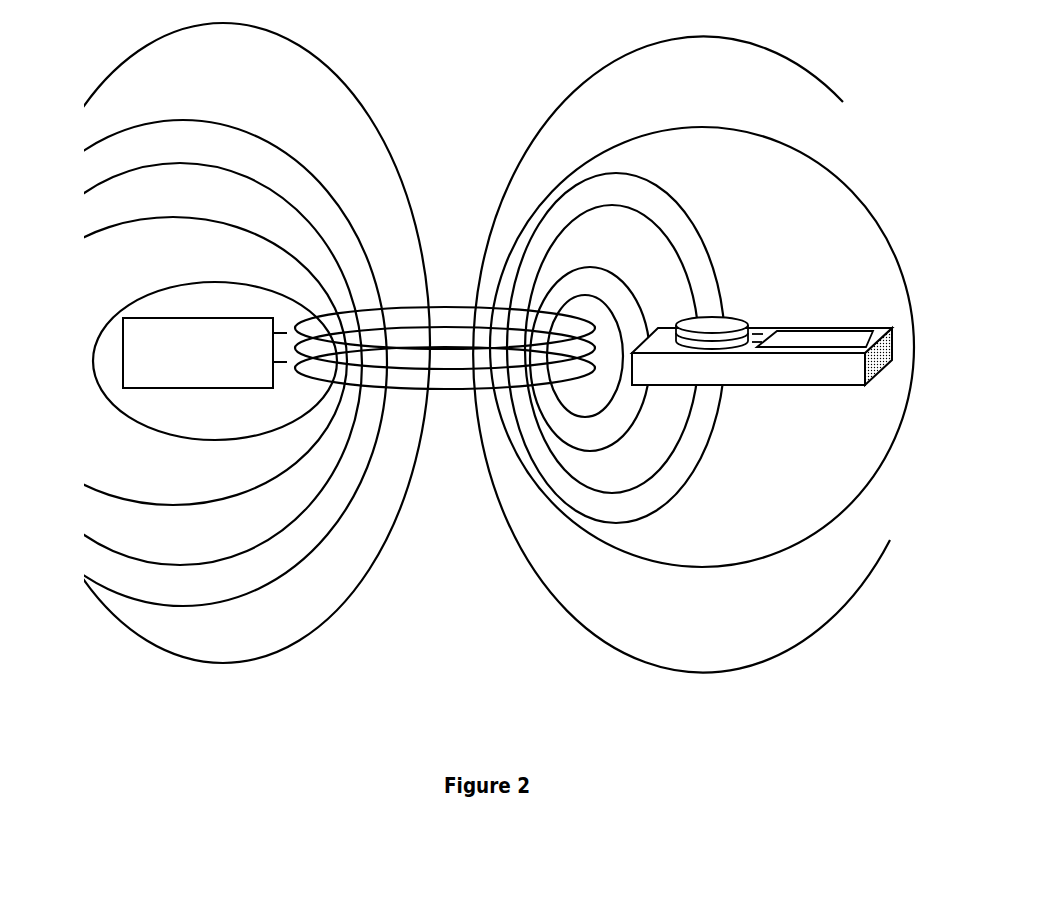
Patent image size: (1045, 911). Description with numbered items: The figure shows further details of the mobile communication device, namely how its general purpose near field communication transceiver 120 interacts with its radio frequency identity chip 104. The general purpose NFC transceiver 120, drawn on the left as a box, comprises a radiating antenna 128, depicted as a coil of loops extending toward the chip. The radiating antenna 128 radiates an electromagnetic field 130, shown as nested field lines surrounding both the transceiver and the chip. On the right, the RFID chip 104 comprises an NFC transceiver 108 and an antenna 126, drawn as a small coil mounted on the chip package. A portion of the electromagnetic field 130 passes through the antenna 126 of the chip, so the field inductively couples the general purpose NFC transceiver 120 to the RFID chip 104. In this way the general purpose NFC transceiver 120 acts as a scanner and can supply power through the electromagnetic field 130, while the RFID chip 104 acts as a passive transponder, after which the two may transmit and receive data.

The electromagnetic field 130 is at (315, 55).
The general purpose near field communication transceiver 120 is at (243, 392).
The radiating antenna 128 is at (457, 393).
The radio frequency identity (RFID) chip 104 is at (765, 322).
The near field communication (NFC) transceiver 108 is at (848, 322).
The antenna 126 is at (708, 350).